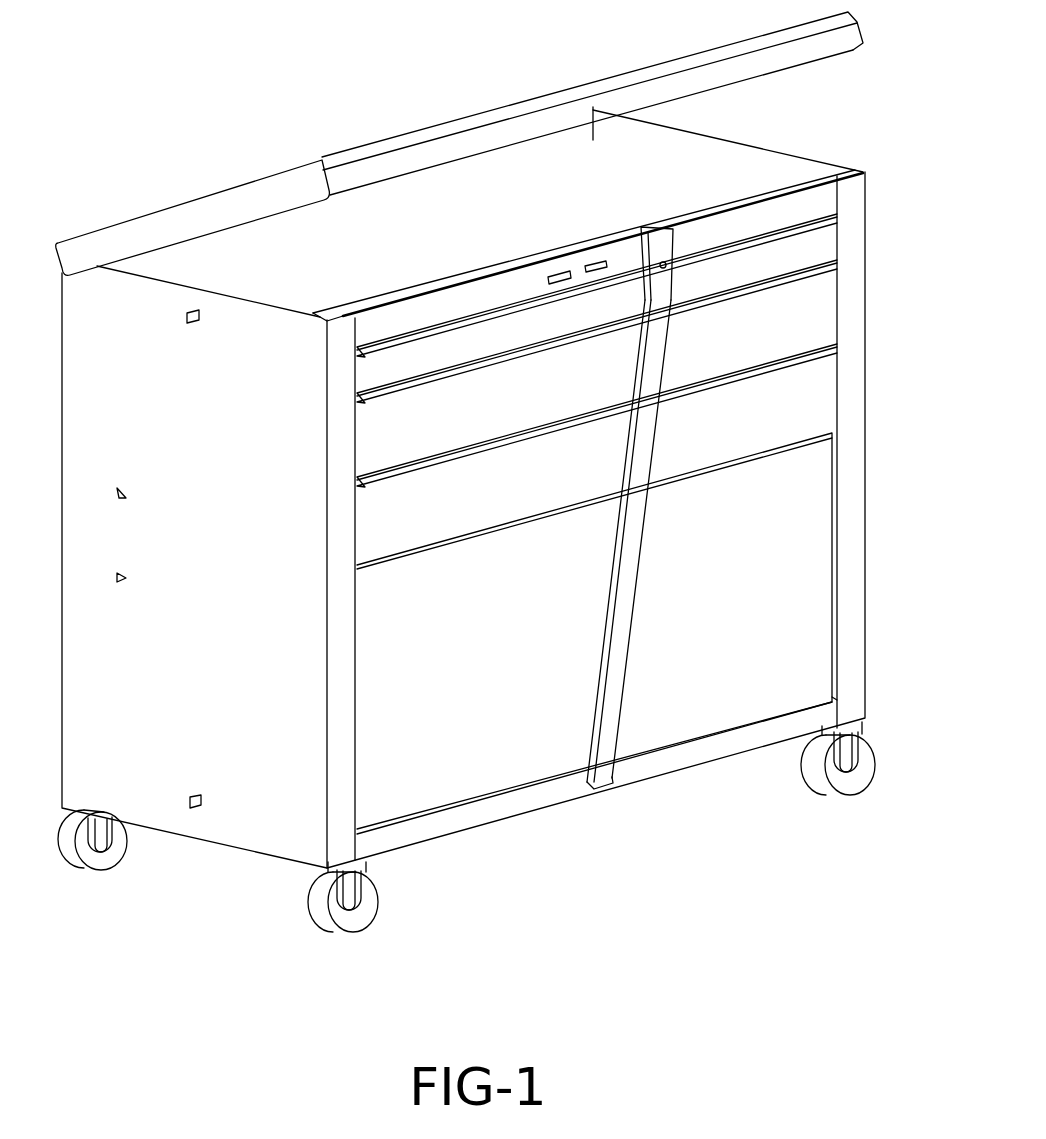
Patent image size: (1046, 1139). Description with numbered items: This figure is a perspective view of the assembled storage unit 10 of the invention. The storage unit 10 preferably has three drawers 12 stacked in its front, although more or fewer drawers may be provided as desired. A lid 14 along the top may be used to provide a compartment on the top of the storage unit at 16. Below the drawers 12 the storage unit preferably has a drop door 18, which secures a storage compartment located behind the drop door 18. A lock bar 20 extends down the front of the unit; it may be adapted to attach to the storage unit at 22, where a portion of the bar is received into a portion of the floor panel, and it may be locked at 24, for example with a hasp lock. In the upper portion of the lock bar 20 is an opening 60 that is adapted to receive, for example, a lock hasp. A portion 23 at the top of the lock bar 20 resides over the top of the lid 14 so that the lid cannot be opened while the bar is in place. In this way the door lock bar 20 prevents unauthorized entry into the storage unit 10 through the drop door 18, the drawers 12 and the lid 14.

The storage unit 10 is at (250, 124).
The drawers 12 is at (818, 250).
The lid 14 is at (607, 78).
The compartment on the top of the storage unit 16 is at (663, 170).
The drop door 18 is at (783, 635).
The lock bar 20 is at (638, 545).
The attachment location of lock bar 22 is at (606, 786).
The portion of the lock bar residing over the lid 23 is at (655, 226).
The locking location 24 is at (560, 277).
The opening 60 is at (666, 267).